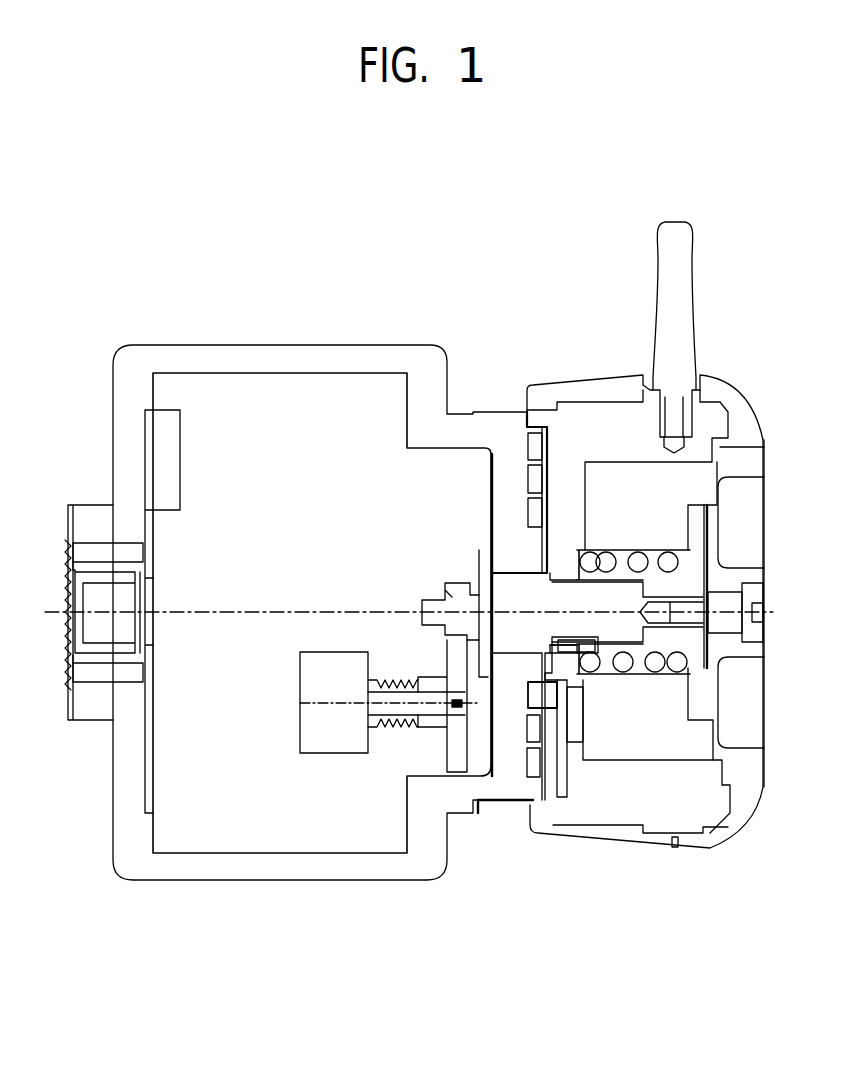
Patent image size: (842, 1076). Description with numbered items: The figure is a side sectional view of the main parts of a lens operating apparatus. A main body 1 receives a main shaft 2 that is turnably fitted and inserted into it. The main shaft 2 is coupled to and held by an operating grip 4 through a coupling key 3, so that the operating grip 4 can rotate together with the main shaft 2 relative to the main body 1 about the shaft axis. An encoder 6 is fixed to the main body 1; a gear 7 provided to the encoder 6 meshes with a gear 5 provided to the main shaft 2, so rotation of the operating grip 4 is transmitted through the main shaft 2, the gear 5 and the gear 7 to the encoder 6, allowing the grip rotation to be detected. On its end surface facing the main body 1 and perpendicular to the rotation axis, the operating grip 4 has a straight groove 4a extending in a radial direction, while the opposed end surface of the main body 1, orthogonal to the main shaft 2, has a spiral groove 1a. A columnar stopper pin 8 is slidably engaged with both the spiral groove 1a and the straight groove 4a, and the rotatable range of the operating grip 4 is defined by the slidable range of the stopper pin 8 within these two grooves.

The main body 1 is at (220, 350).
The spiral groove 1a is at (535, 770).
The main shaft 2 is at (571, 590).
The coupling key 3 is at (577, 643).
The operating grip 4 is at (705, 803).
The straight groove 4a is at (555, 785).
The gear 5 is at (460, 587).
The encoder 6 is at (310, 682).
The gear 7 is at (458, 760).
The stopper pin 8 is at (538, 693).